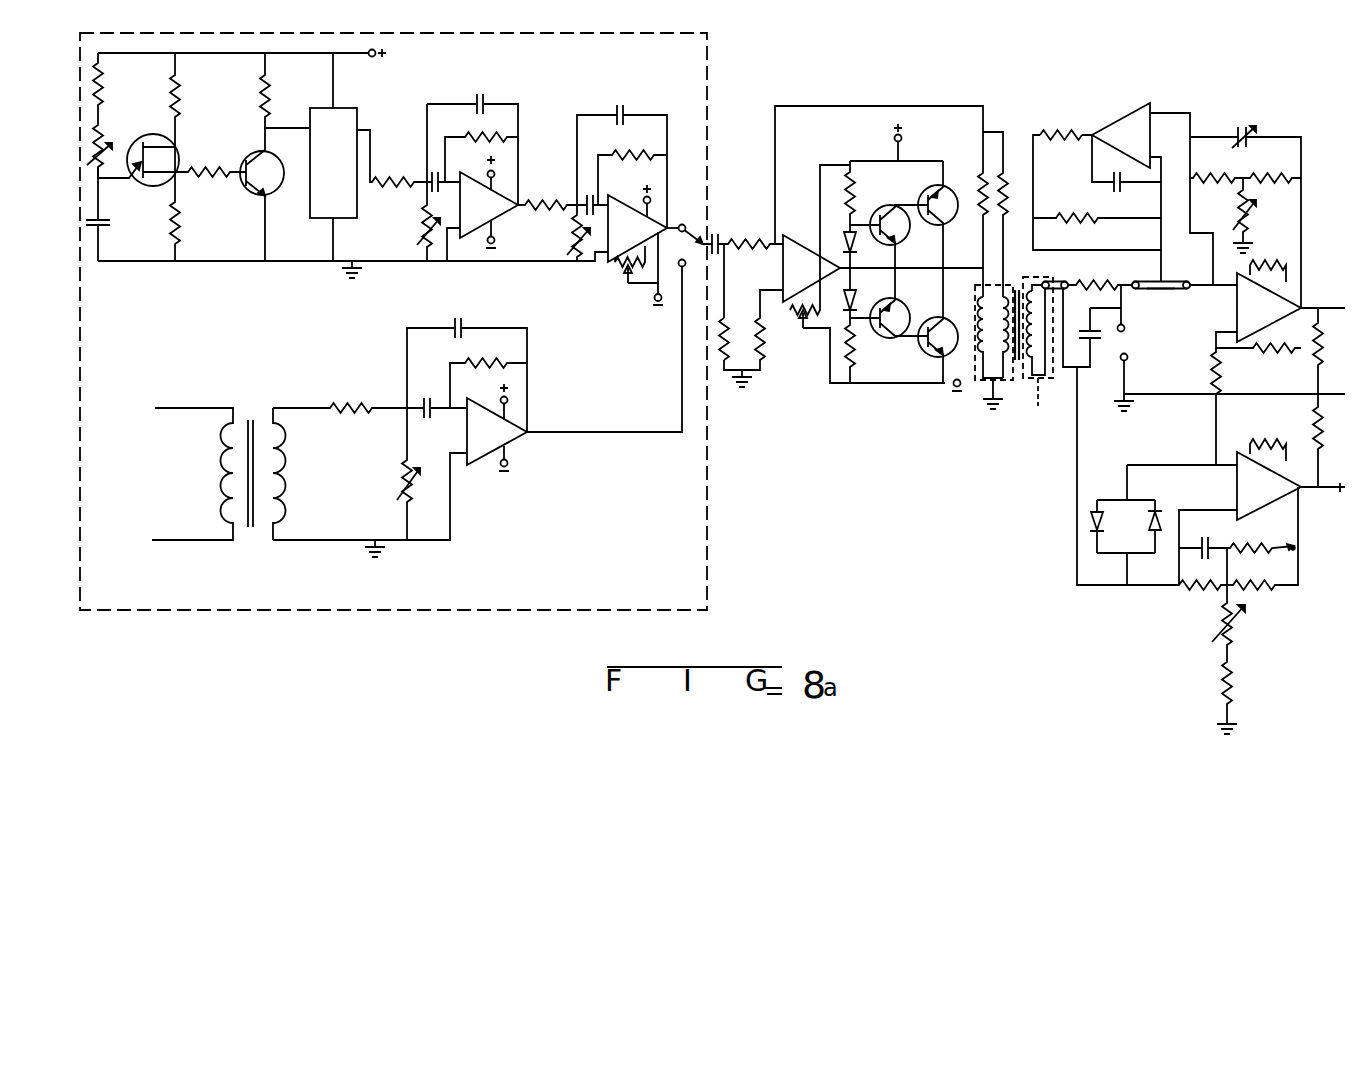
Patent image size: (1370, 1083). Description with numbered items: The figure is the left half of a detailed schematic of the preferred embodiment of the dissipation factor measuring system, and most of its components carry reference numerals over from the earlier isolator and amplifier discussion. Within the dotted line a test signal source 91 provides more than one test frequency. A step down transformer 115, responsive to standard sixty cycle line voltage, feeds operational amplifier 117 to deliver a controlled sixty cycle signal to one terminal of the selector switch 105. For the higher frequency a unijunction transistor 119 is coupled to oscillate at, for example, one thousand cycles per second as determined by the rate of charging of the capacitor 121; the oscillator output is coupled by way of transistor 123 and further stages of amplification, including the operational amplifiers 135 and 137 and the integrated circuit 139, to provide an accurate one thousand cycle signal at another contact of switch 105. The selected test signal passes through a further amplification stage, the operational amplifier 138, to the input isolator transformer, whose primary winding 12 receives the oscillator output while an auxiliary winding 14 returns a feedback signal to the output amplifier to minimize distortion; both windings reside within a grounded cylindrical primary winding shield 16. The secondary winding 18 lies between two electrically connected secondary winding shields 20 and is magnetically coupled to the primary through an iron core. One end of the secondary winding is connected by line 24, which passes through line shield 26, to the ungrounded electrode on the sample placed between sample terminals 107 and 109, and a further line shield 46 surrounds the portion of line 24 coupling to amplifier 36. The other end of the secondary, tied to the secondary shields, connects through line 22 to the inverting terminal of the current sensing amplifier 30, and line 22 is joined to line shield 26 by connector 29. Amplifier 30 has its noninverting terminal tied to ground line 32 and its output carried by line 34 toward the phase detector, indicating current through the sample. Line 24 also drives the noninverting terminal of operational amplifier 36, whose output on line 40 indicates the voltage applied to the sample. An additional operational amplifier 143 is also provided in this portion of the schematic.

The primary winding 12 is at (1016, 360).
The auxiliary winding 14 is at (972, 355).
The primary winding shield 16 is at (976, 380).
The secondary winding 18 is at (1042, 362).
The secondary winding shields 20 is at (1051, 404).
The line 22 is at (1077, 470).
The line 24 is at (1134, 282).
The line shield 26 is at (1060, 282).
The connector 29 is at (1065, 318).
The operational amplifier 30 is at (1237, 487).
The ground line 32 is at (1341, 396).
The line 34 is at (1326, 501).
The operational amplifier 36 is at (1237, 302).
The line 40 is at (1332, 306).
The line shield 46 is at (1170, 289).
The test signal source 91 is at (470, 616).
The selector switch 105 is at (700, 234).
The sample terminal 107 is at (1125, 329).
The sample terminal 109 is at (1128, 357).
The step down transformer 115 is at (251, 531).
The operational amplifier 117 is at (512, 446).
The unijunction transistor 119 is at (143, 142).
The capacitor 121 is at (109, 224).
The transistor 123 is at (283, 192).
The operational amplifier 135 is at (505, 218).
The operational amplifier 137 is at (630, 200).
The operational amplifier 138 is at (783, 268).
The integrated circuit 139 is at (350, 108).
The operational amplifier 143 is at (1125, 120).